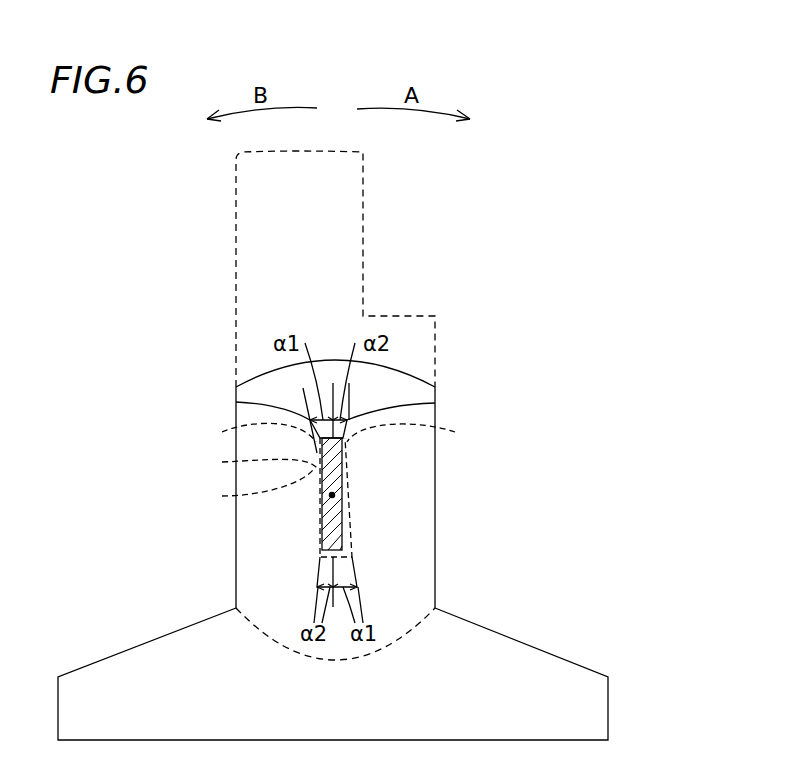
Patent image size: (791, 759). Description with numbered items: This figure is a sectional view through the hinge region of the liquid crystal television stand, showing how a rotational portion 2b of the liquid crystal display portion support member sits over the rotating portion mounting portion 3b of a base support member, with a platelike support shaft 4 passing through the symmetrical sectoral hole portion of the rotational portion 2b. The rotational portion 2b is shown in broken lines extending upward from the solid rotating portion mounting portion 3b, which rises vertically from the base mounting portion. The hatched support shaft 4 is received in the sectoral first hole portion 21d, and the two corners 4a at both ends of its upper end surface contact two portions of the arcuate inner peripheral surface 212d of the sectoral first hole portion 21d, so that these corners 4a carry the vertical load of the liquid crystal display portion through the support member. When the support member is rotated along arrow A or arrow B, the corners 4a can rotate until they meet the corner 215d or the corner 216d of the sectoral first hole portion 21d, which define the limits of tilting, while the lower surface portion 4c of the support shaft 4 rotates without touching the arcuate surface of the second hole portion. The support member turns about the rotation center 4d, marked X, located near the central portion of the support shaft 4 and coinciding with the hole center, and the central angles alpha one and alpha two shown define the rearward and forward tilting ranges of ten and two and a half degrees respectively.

The rotational portion 2b is at (263, 238).
The rotating portion mounting portion 3b is at (143, 673).
The support shaft 4 is at (342, 470).
The corner 4a is at (236, 402).
The lower surface portion 4c is at (345, 558).
The rotation center 4d is at (334, 495).
The sectoral first hole portion 21d is at (246, 489).
The arcuate inner peripheral surface 212d is at (241, 463).
The corner 215d is at (240, 433).
The corner 216d is at (430, 433).